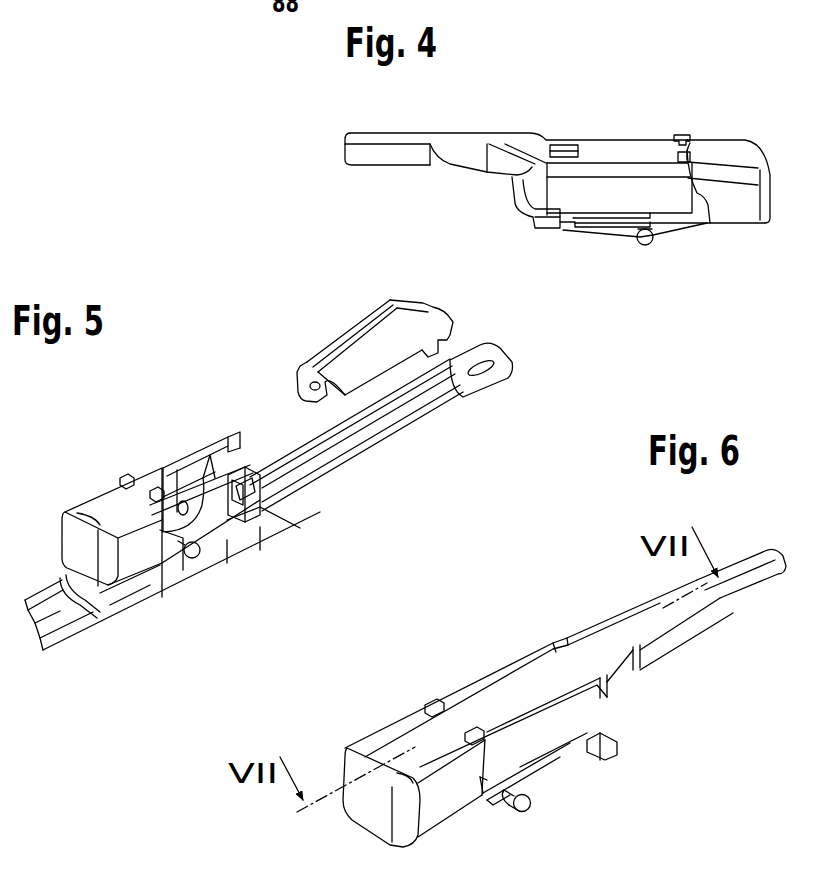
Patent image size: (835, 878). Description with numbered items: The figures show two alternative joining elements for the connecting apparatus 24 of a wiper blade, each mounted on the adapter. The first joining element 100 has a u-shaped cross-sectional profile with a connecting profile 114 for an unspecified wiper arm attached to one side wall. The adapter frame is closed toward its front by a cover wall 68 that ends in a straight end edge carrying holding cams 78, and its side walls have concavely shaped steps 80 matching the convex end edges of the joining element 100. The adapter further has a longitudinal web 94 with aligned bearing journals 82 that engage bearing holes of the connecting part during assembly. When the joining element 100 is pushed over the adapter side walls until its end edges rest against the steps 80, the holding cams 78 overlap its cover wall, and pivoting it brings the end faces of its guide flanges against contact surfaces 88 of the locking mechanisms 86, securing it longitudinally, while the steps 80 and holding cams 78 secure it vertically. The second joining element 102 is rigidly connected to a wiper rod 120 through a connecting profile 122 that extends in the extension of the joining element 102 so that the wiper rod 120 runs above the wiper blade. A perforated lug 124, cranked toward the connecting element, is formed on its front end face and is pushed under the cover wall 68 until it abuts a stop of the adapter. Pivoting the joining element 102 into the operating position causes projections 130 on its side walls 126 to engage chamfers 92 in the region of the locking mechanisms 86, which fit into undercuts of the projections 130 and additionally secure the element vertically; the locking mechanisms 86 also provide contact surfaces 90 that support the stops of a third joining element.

In FIG. 5, the connecting apparatus 24 is at (147, 440).
In FIG. 4, the cover wall 68 is at (725, 150).
In FIG. 5, the cover wall 68 is at (67, 514).
In FIG. 6, the cover wall 68 is at (407, 740).
In FIG. 4, the holding cams 78 is at (688, 152).
In FIG. 5, the holding cams 78 is at (152, 492).
In FIG. 6, the holding cams 78 is at (470, 727).
In FIG. 4, the steps 80 is at (700, 196).
In FIG. 5, the steps 80 is at (182, 547).
In FIG. 6, the steps 80 is at (487, 793).
In FIG. 4, the bearing journals 82 is at (647, 245).
In FIG. 5, the bearing journals 82 is at (196, 554).
In FIG. 6, the bearing journals 82 is at (522, 805).
In FIG. 5, the locking mechanisms 86 is at (268, 500).
In FIG. 4, the contact surfaces 88 is at (567, 223).
In FIG. 5, the contact surfaces 90 is at (220, 480).
In FIG. 5, the chamfers 92 is at (252, 495).
In FIG. 4, the longitudinal web 94 is at (607, 228).
In FIG. 4, the first joining element 100 is at (526, 133).
In FIG. 5, the second joining element 102 is at (318, 337).
In FIG. 6, the second joining element 102 is at (640, 692).
In FIG. 4, the connecting profile 114 is at (459, 135).
In FIG. 6, the wiper rod 120 is at (762, 550).
In FIG. 6, the connecting profile 122 is at (640, 625).
In FIG. 5, the lug 124 is at (298, 392).
In FIG. 5, the side walls 126 is at (393, 370).
In FIG. 6, the side walls 126 is at (550, 733).
In FIG. 5, the projections 130 is at (422, 338).
In FIG. 6, the projections 130 is at (610, 737).